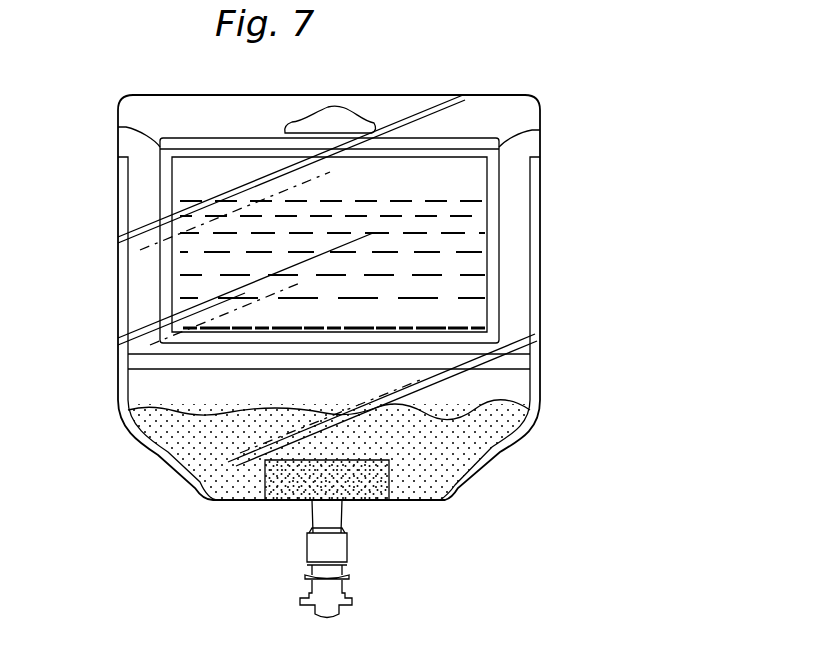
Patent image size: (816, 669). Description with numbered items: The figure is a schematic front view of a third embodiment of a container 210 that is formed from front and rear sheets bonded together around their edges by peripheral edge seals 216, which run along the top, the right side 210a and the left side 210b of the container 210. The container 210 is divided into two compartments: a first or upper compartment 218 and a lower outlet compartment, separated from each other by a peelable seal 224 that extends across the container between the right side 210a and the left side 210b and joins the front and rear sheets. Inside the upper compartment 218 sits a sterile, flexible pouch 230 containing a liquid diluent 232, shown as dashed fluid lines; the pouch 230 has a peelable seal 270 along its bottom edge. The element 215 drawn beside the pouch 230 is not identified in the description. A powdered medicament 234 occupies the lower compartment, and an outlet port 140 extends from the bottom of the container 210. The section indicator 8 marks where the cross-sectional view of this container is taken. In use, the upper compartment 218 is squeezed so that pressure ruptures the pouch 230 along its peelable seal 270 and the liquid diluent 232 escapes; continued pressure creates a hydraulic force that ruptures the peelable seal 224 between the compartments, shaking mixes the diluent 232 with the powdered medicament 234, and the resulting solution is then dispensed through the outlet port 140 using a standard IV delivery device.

The section line 8- 8 is at (419, 93).
The container 210 is at (113, 117).
The right side 210a is at (540, 314).
The left side 210b is at (118, 250).
The peripheral edge seals 216 is at (136, 140).
The upper compartment 218 is at (513, 177).
The flexible pouch 230 is at (502, 237).
The frame side wall 215 is at (515, 259).
The liquid diluent 232 is at (333, 264).
The peelable seal 224 is at (522, 367).
The peelable seal 270 is at (217, 360).
The powdered medicament 234 is at (475, 445).
The outlet port 140 is at (346, 578).